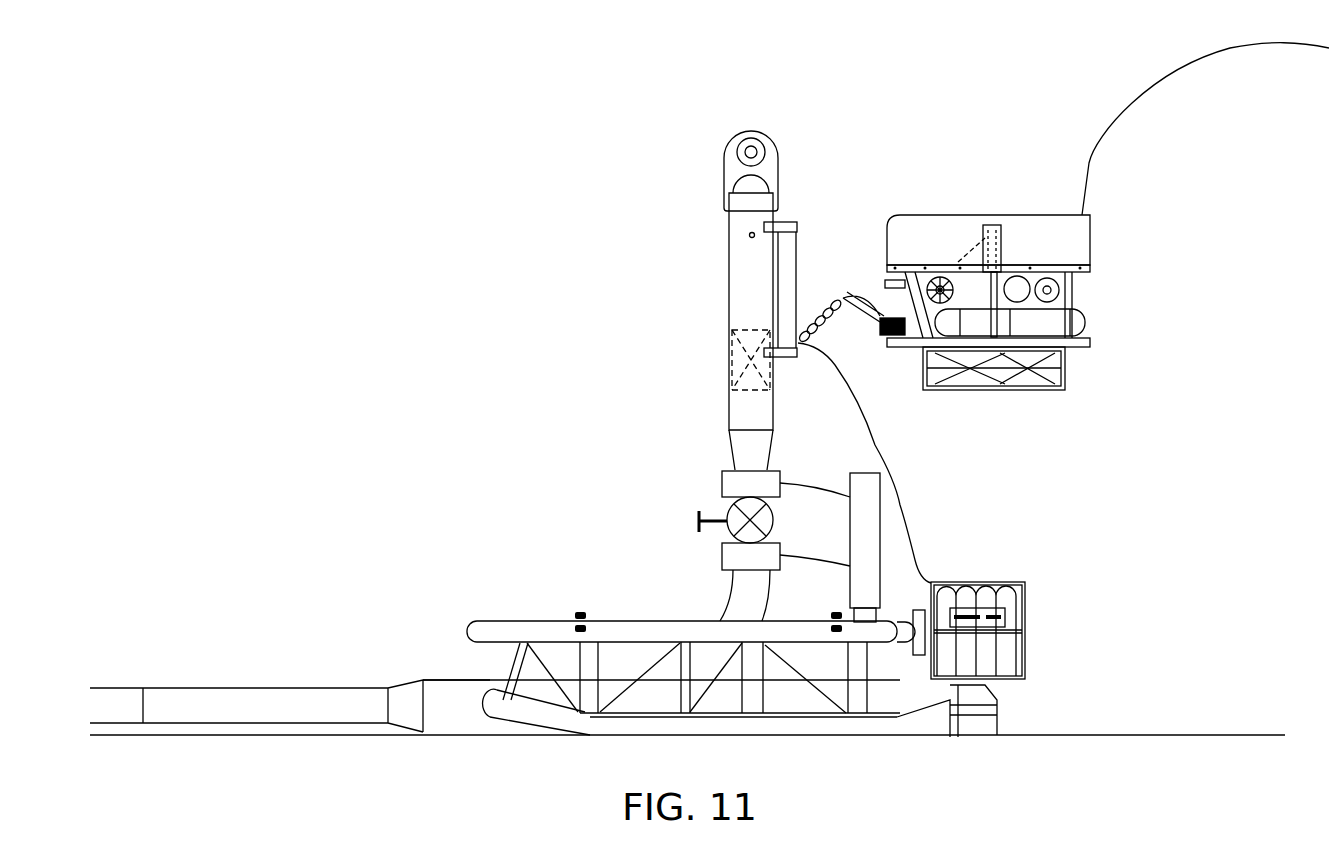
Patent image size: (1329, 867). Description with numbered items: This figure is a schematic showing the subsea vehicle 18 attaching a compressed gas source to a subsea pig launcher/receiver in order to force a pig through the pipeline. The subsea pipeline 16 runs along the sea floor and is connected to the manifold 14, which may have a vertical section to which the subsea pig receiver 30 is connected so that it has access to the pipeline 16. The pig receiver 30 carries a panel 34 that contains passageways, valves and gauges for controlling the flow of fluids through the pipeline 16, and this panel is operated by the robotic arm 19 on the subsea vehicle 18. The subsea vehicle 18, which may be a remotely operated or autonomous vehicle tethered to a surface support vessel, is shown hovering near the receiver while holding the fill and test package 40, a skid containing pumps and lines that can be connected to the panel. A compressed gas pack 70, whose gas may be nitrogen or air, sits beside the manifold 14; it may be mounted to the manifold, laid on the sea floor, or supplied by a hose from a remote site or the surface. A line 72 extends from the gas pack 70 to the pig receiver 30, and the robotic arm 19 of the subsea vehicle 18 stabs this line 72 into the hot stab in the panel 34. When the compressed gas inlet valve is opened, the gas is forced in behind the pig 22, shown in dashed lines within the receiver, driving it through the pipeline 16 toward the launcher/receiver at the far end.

The manifold 14 is at (678, 565).
The subsea pipeline 16 is at (250, 682).
The subsea vehicle 18 is at (1059, 285).
The robotic arm 19 is at (845, 272).
The pig 22 is at (735, 353).
The subsea pig launcher/receiver 30 is at (715, 124).
The panel 34 is at (796, 213).
The fill and test package 40 is at (1073, 378).
The compressed gas pack 70 is at (1040, 578).
The line 72 is at (877, 442).